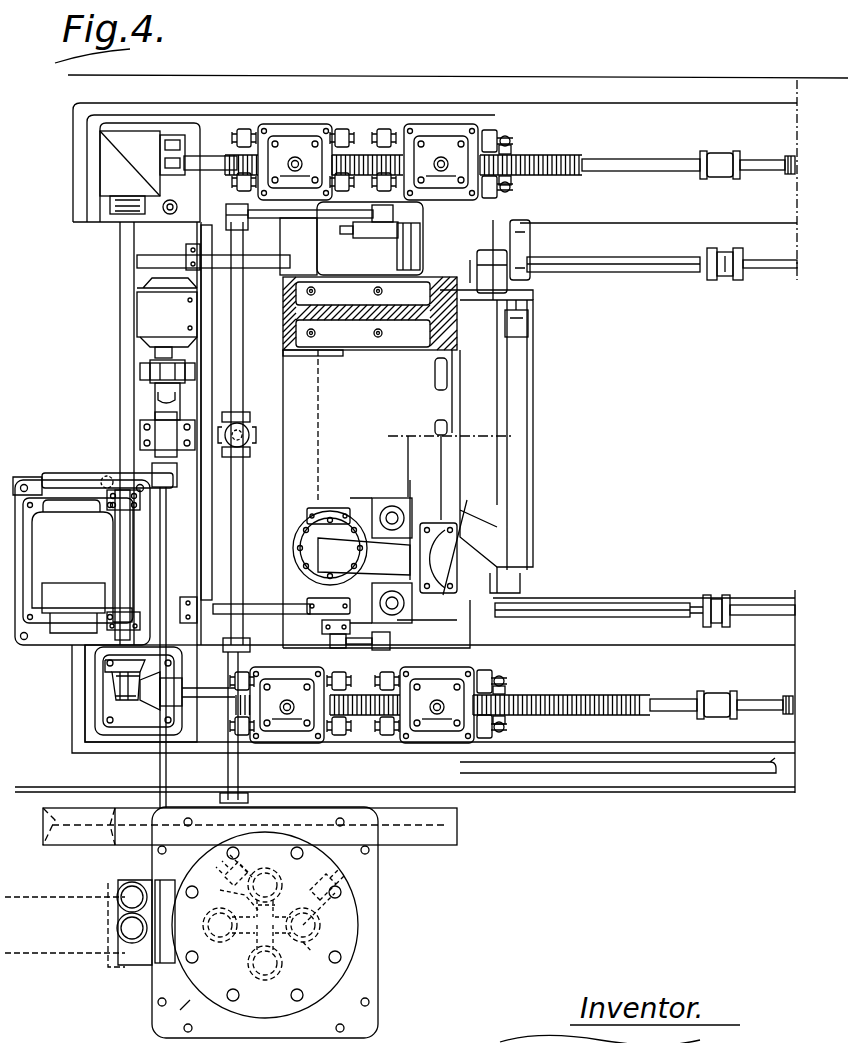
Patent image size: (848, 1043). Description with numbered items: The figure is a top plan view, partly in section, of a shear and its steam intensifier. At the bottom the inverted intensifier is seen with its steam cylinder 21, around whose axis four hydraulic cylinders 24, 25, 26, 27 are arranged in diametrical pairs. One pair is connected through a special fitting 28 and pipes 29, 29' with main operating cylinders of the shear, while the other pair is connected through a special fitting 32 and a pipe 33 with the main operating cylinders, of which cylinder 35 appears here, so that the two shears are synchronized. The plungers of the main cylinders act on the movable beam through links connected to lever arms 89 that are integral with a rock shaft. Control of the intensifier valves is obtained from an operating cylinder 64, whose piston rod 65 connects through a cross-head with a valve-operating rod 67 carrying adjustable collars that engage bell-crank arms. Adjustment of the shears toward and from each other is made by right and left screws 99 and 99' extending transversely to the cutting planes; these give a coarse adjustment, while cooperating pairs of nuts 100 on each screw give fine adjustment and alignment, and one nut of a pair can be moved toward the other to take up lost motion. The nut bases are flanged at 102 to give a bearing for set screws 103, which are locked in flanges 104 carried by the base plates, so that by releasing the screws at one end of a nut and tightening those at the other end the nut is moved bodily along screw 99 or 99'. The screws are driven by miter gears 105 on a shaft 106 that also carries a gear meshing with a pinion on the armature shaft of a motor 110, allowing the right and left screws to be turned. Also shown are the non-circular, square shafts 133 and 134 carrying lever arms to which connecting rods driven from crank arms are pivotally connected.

The nuts 100 is at (298, 148).
The flanges 102 is at (490, 130).
The flanges 104 is at (496, 136).
The set screws 103 is at (508, 150).
The left screw 99' is at (510, 177).
The right screw 99 is at (514, 697).
The non-circular shaft 134 is at (640, 268).
The non-circular shaft 133 is at (612, 606).
The operating cylinder 64 is at (155, 308).
The piston rod 65 is at (147, 367).
The shaft 106 is at (127, 420).
The pipe 29' is at (247, 437).
The pipe 29 is at (253, 727).
The valve-operating rod 67 is at (160, 768).
The motor 110 is at (82, 562).
The main operating cylinder 35 is at (296, 545).
The lever arm 89 is at (365, 560).
The miter gears 105 is at (118, 698).
The pipe 33 is at (633, 768).
The steam cylinder 21 is at (343, 937).
The hydraulic cylinder 25 is at (265, 968).
The hydraulic cylinder 26 is at (222, 945).
The hydraulic cylinder 24 is at (325, 927).
The hydraulic cylinder 27 is at (280, 895).
The special fitting 32 is at (235, 889).
The special fitting 28 is at (310, 945).